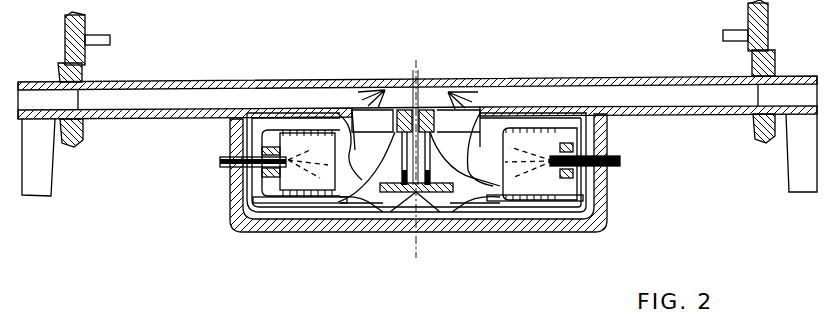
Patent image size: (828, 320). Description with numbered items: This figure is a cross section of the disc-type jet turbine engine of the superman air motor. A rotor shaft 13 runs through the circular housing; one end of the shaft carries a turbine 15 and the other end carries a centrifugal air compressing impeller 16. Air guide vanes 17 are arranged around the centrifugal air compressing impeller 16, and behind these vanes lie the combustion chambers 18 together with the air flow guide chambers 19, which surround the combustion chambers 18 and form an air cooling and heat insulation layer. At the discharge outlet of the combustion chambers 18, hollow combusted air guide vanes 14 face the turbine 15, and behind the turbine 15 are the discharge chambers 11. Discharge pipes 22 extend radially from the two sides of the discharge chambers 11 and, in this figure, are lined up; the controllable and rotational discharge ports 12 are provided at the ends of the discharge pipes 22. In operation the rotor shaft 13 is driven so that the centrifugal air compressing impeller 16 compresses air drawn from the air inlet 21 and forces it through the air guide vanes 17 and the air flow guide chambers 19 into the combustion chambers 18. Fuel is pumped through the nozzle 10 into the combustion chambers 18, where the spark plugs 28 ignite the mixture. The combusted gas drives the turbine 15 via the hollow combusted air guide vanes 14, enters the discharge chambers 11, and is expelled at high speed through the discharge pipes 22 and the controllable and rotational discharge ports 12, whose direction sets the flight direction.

The nozzle 10 is at (227, 168).
The discharge chambers 11 is at (383, 100).
The controllable and rotational discharge ports 12 is at (42, 177).
The rotor shaft 13 is at (418, 108).
The hollow combusted air guide vanes 14 is at (372, 137).
The turbine 15 is at (458, 118).
The centrifugal air compressing impeller 16 is at (386, 203).
The air guide vanes 17 is at (418, 244).
The combustion chambers 18 is at (309, 153).
The air flow guide chambers 19 is at (230, 207).
The air inlet 21 is at (427, 230).
The discharge pipes 22 is at (240, 102).
The spark plugs 28 is at (215, 163).